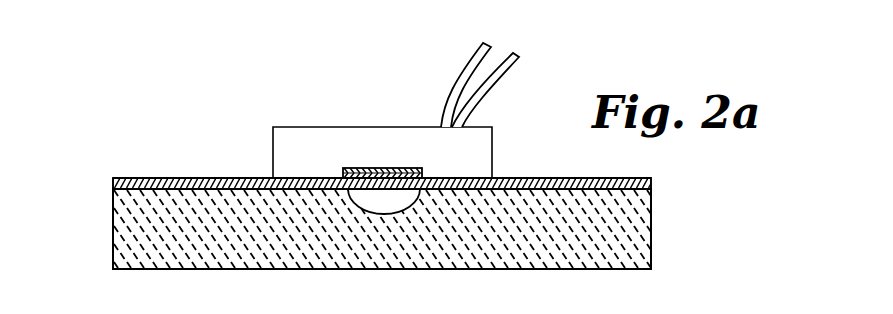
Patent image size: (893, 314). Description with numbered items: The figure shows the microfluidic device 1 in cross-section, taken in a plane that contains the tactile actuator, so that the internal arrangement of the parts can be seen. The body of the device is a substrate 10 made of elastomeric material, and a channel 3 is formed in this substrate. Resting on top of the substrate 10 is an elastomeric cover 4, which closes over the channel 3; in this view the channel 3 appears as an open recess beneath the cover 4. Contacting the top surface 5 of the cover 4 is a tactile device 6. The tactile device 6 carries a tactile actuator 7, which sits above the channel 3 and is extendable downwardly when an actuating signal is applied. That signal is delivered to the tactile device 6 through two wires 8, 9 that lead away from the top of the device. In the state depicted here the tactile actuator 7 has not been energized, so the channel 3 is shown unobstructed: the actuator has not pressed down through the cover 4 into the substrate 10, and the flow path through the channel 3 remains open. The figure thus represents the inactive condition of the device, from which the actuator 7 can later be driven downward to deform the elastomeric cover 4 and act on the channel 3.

The microfluidic device 1 is at (686, 182).
The channel 3 is at (375, 200).
The elastomeric cover 4 is at (112, 185).
The top surface 5 is at (212, 178).
The tactile device 6 is at (278, 142).
The tactile actuator 7 is at (375, 168).
The wire 8 is at (488, 50).
The wire 9 is at (508, 77).
The substrate 10 is at (132, 242).